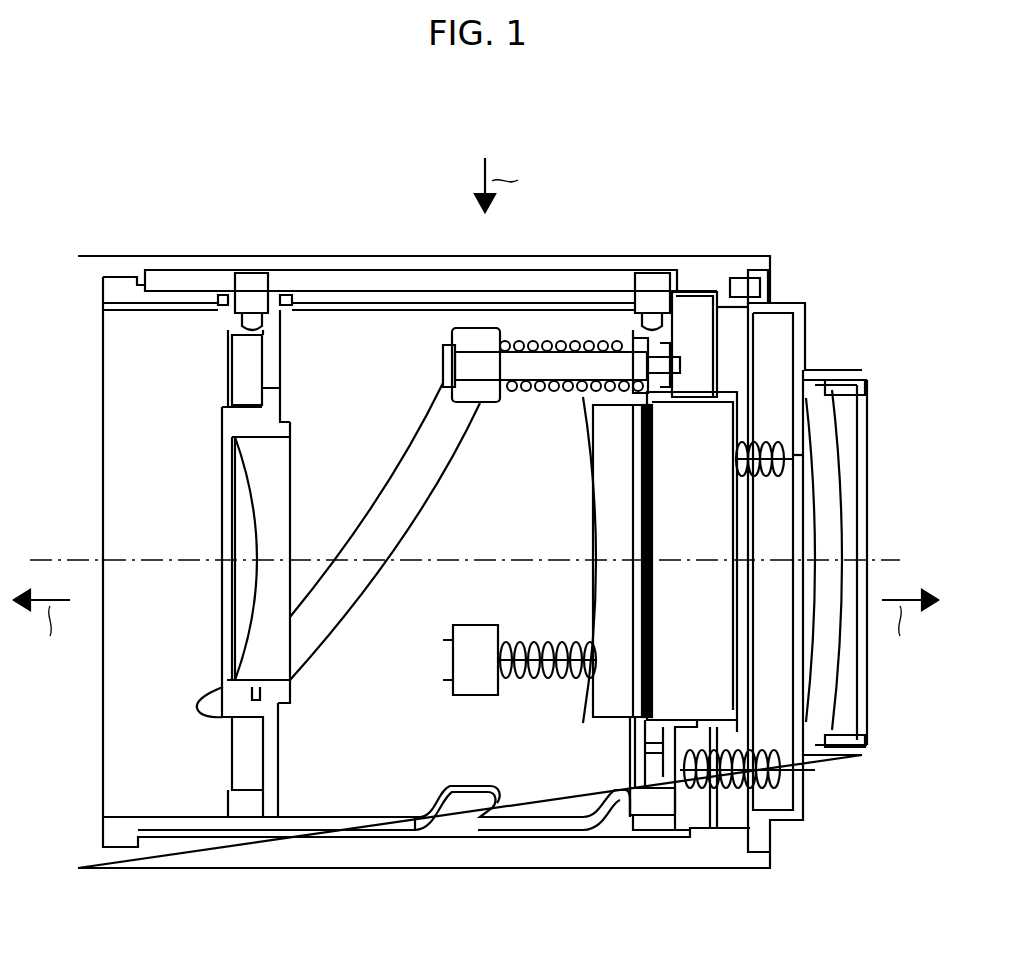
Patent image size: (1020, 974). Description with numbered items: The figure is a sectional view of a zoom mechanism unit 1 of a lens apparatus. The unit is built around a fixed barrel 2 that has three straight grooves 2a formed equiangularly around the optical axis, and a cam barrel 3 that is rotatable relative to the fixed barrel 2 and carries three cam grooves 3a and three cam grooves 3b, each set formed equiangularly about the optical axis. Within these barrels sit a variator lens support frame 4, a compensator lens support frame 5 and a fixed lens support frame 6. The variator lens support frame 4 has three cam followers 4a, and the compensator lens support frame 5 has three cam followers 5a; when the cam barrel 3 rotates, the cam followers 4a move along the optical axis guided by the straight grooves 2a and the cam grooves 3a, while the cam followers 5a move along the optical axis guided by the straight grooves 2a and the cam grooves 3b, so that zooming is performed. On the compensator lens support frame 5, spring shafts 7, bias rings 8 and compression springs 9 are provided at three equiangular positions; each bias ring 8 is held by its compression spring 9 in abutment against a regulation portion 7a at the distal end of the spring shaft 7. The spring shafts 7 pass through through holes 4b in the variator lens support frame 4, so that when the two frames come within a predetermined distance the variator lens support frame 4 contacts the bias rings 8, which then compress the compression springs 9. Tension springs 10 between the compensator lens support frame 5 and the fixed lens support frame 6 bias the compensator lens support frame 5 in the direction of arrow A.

The zoom mechanism unit 1 is at (766, 230).
The fixed barrel 2 is at (465, 852).
The straight grooves 2a is at (335, 281).
The cam barrel 3 is at (404, 800).
The cam grooves 3a is at (330, 615).
The cam grooves 3b is at (590, 385).
The variator lens support frame 4 is at (253, 805).
The cam followers 4a is at (250, 290).
The through holes 4b is at (276, 365).
The compensator lens support frame 5 is at (655, 805).
The cam followers 5a is at (645, 290).
The fixed lens support frame 6 is at (798, 340).
The spring shaft 7 is at (530, 365).
The regulation portion 7a is at (446, 362).
The bias ring 8 is at (475, 340).
The compression spring 9 is at (556, 345).
The tension spring 10 is at (728, 790).